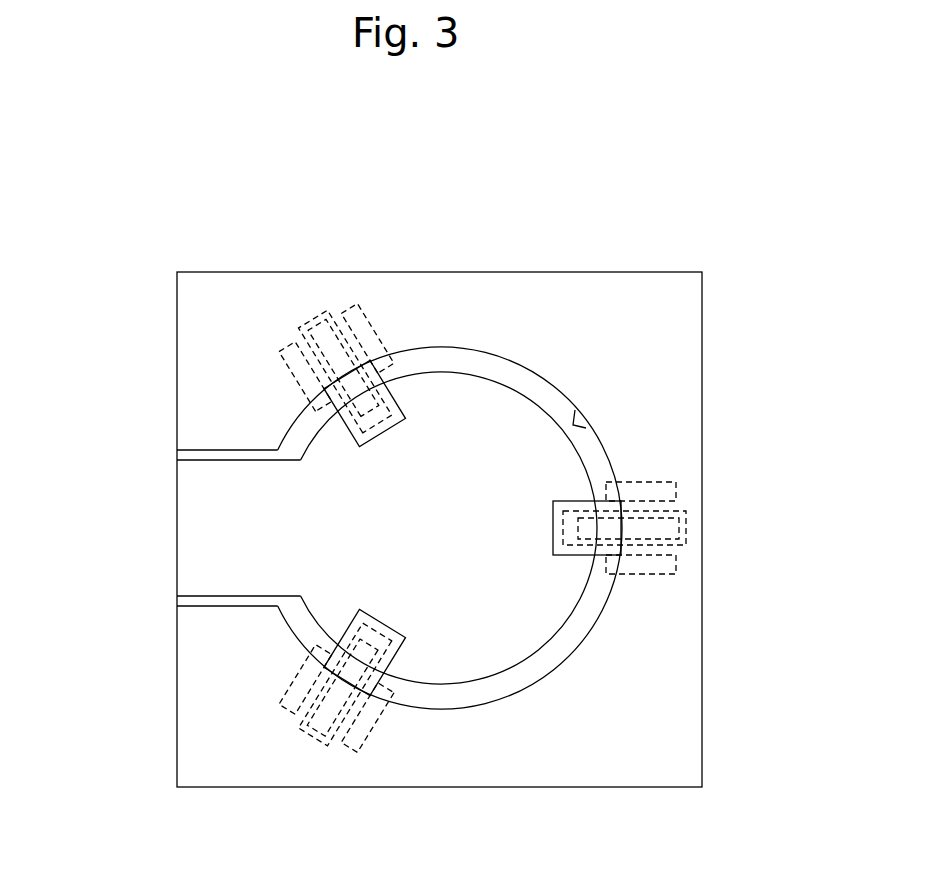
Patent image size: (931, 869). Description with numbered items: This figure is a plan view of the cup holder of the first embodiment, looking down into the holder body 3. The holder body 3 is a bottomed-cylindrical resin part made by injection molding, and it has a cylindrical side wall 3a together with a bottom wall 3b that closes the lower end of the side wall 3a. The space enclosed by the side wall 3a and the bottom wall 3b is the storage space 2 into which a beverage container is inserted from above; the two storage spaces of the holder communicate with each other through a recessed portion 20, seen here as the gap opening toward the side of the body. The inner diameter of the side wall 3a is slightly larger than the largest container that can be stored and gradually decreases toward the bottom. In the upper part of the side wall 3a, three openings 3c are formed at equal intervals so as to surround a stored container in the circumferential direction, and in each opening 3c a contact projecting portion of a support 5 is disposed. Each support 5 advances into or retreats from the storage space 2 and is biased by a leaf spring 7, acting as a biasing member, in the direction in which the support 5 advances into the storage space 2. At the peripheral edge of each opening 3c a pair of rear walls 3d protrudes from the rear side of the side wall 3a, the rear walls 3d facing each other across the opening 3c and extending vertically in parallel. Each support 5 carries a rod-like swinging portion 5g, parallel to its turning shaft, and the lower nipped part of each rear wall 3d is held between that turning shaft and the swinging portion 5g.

The storage space 2 is at (450, 461).
The holder body 3 is at (205, 302).
The side wall 3a is at (575, 410).
The bottom wall 3b is at (443, 393).
The opening 3c is at (383, 332).
The rear wall 3d is at (658, 507).
The support 5 is at (332, 436).
The swinging portion 5g is at (655, 485).
The leaf spring 7 is at (317, 313).
The recessed portion 20 is at (222, 500).